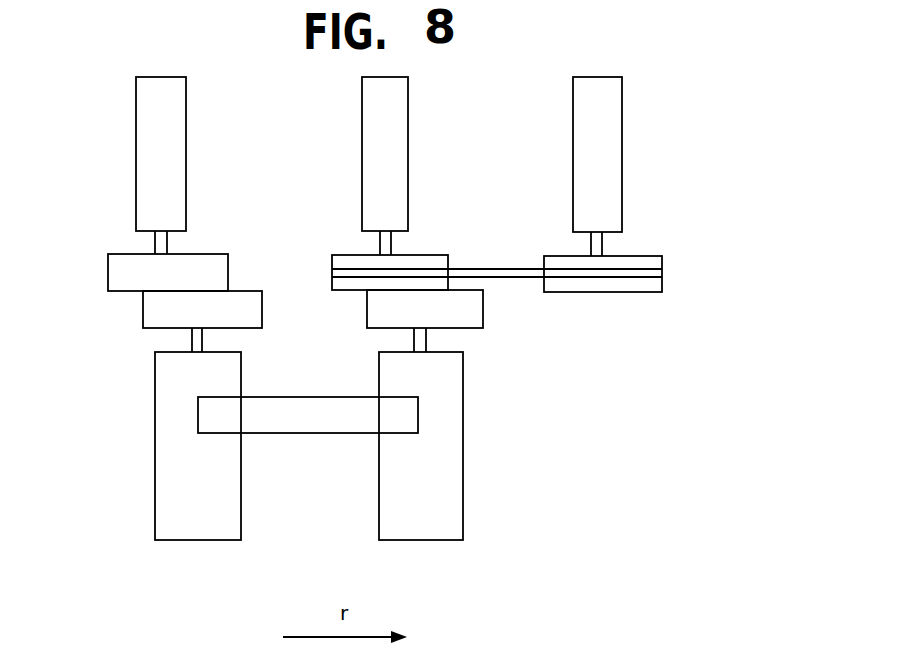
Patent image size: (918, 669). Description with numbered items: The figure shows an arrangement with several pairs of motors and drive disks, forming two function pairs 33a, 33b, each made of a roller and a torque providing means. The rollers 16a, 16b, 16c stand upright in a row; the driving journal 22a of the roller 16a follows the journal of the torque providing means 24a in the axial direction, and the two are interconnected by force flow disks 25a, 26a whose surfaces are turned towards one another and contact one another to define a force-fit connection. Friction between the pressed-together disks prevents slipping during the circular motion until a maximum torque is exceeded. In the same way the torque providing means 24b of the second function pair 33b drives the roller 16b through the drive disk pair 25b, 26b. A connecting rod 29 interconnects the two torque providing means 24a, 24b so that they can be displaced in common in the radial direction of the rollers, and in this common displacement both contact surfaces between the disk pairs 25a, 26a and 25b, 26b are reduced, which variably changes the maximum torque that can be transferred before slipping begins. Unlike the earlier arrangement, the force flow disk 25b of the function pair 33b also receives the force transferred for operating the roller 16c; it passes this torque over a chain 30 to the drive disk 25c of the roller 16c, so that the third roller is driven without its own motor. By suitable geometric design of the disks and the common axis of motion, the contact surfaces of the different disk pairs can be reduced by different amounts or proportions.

The roller 16a is at (146, 147).
The roller 16b is at (372, 145).
The roller 16c is at (584, 147).
The driving journal 22a is at (160, 243).
The torque providing means 24a is at (167, 468).
The torque providing means 24b is at (458, 486).
The force flow disk 25a is at (127, 275).
The force flow disk 25b is at (430, 255).
The drive disk 25c is at (643, 256).
The force flow disk 26a is at (162, 311).
The force flow disk 26b is at (475, 327).
The connecting rod 29 is at (291, 428).
The chain 30 is at (507, 268).
The function pair 33a is at (145, 572).
The function pair 33b is at (496, 557).